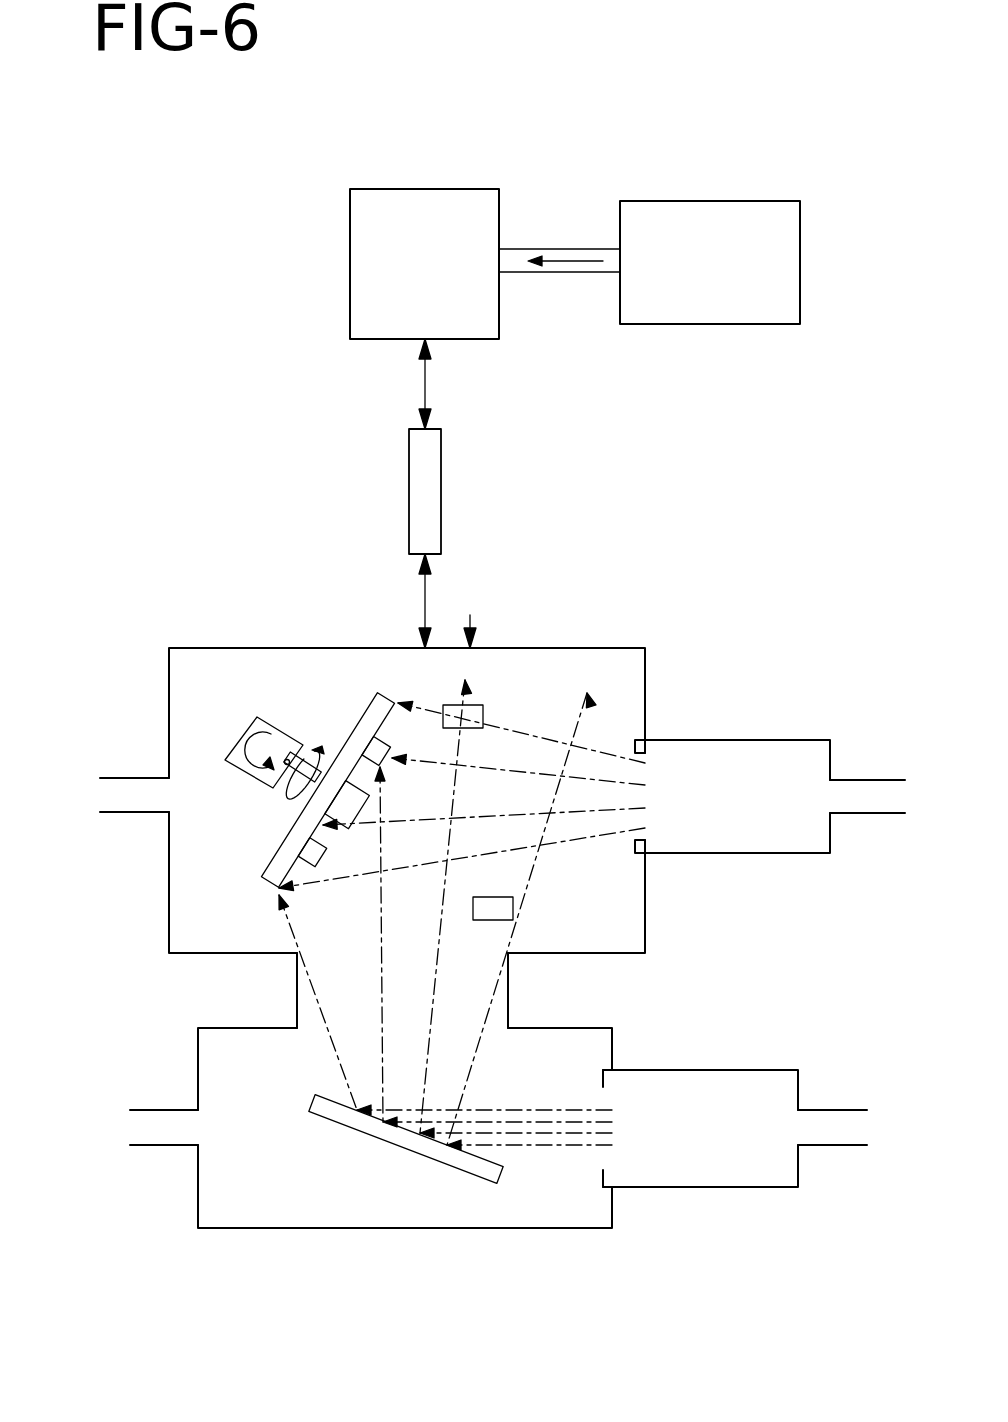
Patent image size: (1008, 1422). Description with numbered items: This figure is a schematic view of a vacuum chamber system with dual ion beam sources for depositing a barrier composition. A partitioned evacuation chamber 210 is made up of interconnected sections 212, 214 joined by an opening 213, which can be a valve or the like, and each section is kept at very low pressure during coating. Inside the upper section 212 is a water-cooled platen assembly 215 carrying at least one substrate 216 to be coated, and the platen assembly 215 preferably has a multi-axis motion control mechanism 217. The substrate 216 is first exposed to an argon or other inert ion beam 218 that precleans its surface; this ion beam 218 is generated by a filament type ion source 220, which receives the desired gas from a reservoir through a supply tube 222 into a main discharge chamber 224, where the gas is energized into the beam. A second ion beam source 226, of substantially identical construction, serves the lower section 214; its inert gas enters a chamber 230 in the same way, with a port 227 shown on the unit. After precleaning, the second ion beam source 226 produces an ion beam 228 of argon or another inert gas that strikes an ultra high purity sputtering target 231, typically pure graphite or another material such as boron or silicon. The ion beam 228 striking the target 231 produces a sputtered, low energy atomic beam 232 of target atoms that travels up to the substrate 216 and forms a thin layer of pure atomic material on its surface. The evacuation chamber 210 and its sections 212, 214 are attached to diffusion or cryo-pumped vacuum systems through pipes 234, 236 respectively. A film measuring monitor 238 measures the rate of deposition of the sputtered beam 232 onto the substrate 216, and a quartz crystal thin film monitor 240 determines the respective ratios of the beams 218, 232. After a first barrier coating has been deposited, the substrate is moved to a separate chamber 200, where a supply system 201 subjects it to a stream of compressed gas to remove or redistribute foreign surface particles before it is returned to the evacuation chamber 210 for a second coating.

The chamber 200 is at (440, 189).
The supply system 201 is at (750, 201).
The partitioned evacuation chamber 210 is at (470, 620).
The section 212 is at (280, 648).
The opening 213 is at (508, 992).
The section 214 is at (450, 1228).
The platen assembly 215 is at (432, 477).
The substrate 216 is at (375, 697).
The multi-axis motion control mechanism 217 is at (253, 700).
The ion beam 218 is at (582, 807).
The filament type ion source 220 is at (741, 740).
The supply tube 222 is at (890, 780).
The main discharge chamber 224 is at (765, 830).
The second ion beam source 226 is at (762, 1070).
The port 227 is at (847, 1147).
The ion beam 228 is at (557, 1133).
The chamber 230 is at (717, 1142).
The sputtering target 231 is at (397, 1147).
The sputtered atomic beam 232 is at (383, 1055).
The pipe 234 is at (150, 778).
The pipe 236 is at (173, 1145).
The film measuring monitor 238 is at (503, 908).
The quartz crystal thin film monitor 240 is at (480, 708).